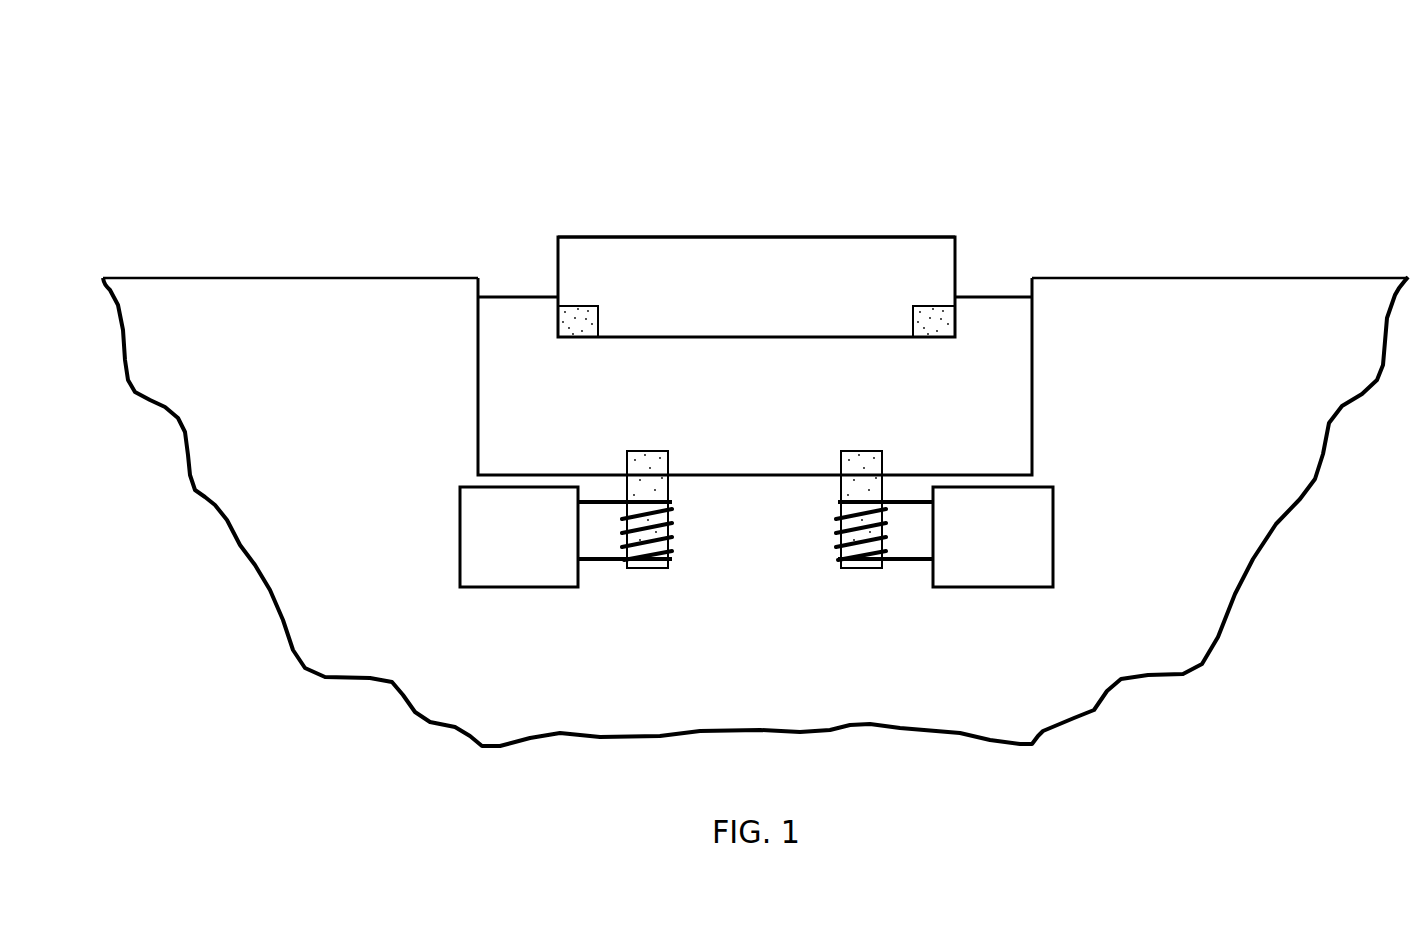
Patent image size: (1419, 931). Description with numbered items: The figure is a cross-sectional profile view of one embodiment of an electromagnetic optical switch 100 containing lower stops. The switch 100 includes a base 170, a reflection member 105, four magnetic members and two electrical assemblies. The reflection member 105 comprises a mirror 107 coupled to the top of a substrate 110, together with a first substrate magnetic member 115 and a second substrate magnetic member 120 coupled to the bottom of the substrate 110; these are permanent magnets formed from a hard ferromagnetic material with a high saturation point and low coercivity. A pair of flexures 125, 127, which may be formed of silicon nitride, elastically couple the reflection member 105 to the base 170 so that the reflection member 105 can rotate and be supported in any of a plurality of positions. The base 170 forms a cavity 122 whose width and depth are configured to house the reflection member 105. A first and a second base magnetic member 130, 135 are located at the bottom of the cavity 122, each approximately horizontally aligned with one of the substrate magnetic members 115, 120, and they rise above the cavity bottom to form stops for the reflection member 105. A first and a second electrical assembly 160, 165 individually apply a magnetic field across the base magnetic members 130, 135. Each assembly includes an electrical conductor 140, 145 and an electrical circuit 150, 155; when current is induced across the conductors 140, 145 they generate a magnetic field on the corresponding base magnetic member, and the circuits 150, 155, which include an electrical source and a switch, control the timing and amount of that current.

The electromagnetic optical switch 100 is at (318, 132).
The reflection member 105 is at (752, 255).
The mirror 107 is at (706, 236).
The substrate 110 is at (840, 265).
The first substrate magnetic member 115 is at (583, 326).
The second substrate magnetic member 120 is at (930, 326).
The cavity 122 is at (770, 424).
The flexure 125 is at (518, 274).
The flexure 127 is at (993, 274).
The first base magnetic member 130 is at (650, 473).
The second base magnetic member 135 is at (855, 473).
The electrical conductor 140 is at (650, 553).
The electrical conductor 145 is at (862, 553).
The electrical circuit 150 is at (508, 556).
The electrical circuit 155 is at (995, 540).
The first electrical assembly 160 is at (605, 596).
The second electrical assembly 165 is at (905, 596).
The base 170 is at (248, 310).